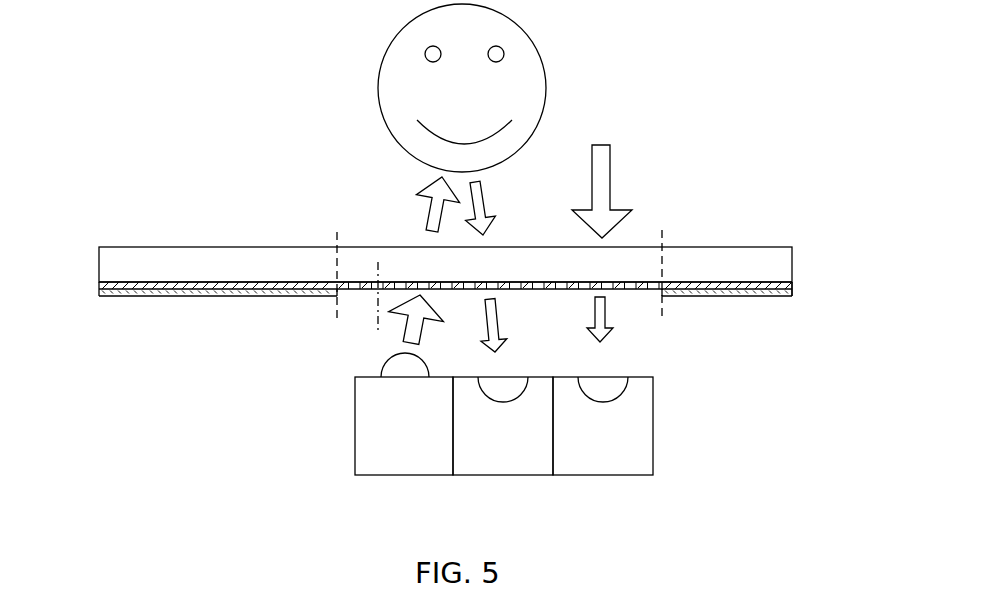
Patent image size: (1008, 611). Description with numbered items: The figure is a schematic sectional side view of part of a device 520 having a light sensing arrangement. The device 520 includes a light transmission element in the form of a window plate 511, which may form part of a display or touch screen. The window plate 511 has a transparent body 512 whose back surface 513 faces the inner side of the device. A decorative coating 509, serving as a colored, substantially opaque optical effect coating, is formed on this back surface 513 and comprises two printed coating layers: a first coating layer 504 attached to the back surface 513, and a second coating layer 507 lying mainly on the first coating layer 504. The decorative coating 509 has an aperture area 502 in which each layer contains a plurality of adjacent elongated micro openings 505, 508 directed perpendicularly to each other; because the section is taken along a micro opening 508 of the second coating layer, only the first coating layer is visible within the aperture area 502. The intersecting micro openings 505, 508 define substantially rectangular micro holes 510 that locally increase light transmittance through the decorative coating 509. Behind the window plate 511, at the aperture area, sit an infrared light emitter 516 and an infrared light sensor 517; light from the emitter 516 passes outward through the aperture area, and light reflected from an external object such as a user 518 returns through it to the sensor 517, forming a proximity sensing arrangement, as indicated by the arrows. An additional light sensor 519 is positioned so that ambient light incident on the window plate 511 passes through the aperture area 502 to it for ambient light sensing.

The aperture area 502 is at (665, 232).
The first coating layer 504 is at (783, 285).
The micro openings 505 is at (625, 292).
The second coating layer 507 is at (780, 293).
The micro opening 508 is at (642, 293).
The decorative coating 509 is at (810, 294).
The micro holes 510 is at (378, 300).
The window plate 511 is at (285, 247).
The transparent body 512 is at (128, 263).
The back surface 513 is at (342, 294).
The infrared light emitter 516 is at (385, 439).
The infrared light sensor 517 is at (484, 439).
The user 518 is at (551, 48).
The additional light sensor 519 is at (584, 439).
The device 520 is at (413, 209).